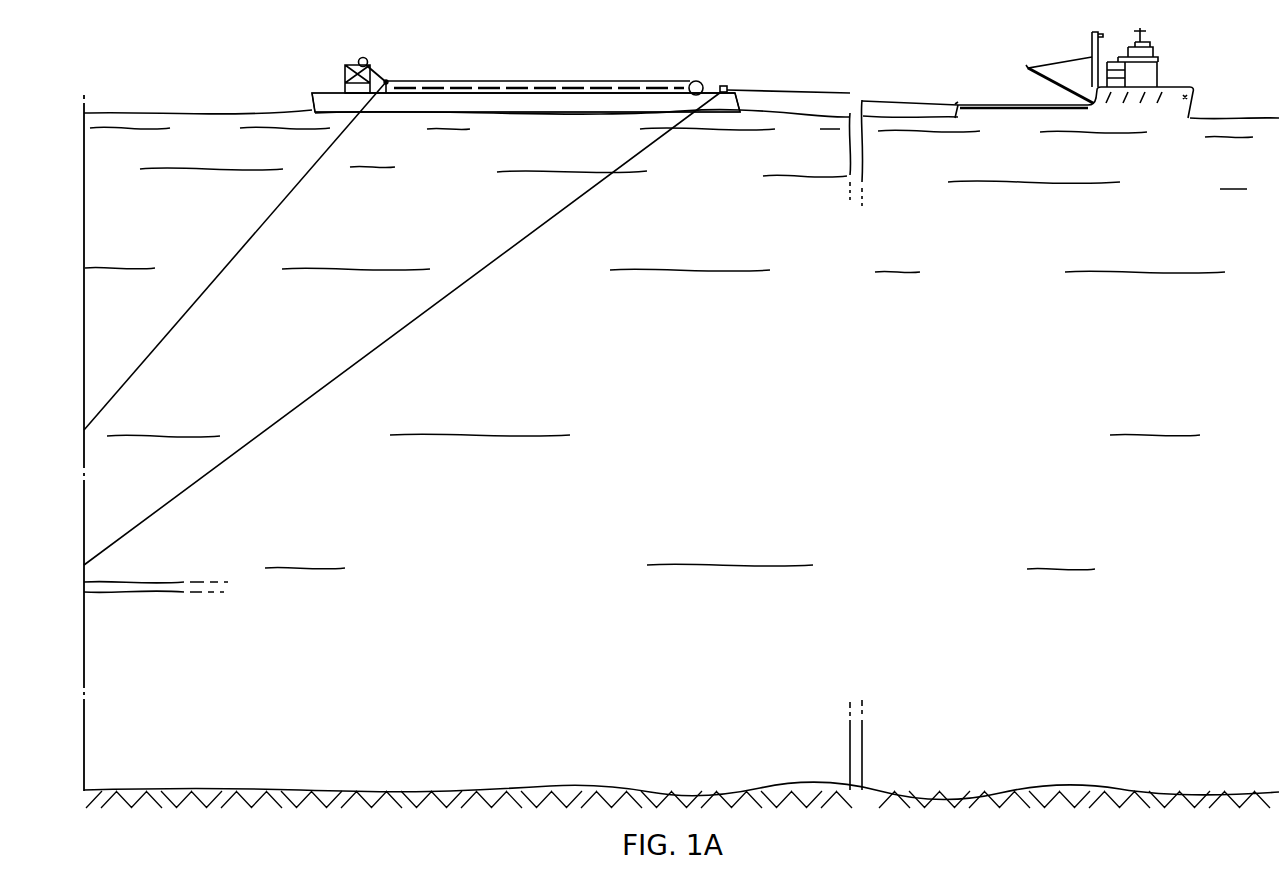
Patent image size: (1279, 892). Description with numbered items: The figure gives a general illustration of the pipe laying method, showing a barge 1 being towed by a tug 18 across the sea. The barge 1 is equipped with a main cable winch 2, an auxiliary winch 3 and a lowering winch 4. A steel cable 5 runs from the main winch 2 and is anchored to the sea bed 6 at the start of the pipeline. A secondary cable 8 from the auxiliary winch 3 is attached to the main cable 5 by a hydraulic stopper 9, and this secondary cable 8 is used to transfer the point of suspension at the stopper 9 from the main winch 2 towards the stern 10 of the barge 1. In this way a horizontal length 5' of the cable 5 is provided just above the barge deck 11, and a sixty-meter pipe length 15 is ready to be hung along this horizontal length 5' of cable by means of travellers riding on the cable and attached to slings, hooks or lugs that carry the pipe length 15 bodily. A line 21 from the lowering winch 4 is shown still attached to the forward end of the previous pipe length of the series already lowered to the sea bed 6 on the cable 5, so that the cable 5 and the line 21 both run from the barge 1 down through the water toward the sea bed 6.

The barge 1 is at (530, 103).
The main cable winch 2 is at (699, 84).
The auxiliary winch 3 is at (358, 62).
The lowering winch 4 is at (724, 88).
The steel cable 5 is at (235, 256).
The horizontal length of cable 5' is at (539, 64).
The sea bed 6 is at (541, 790).
The secondary cable 8 is at (388, 78).
The hydraulic stopper 9 is at (386, 93).
The stern 10 is at (305, 95).
The barge deck 11 is at (620, 102).
The pipe length 15 is at (570, 90).
The tug 18 is at (977, 105).
The line 21 is at (558, 216).